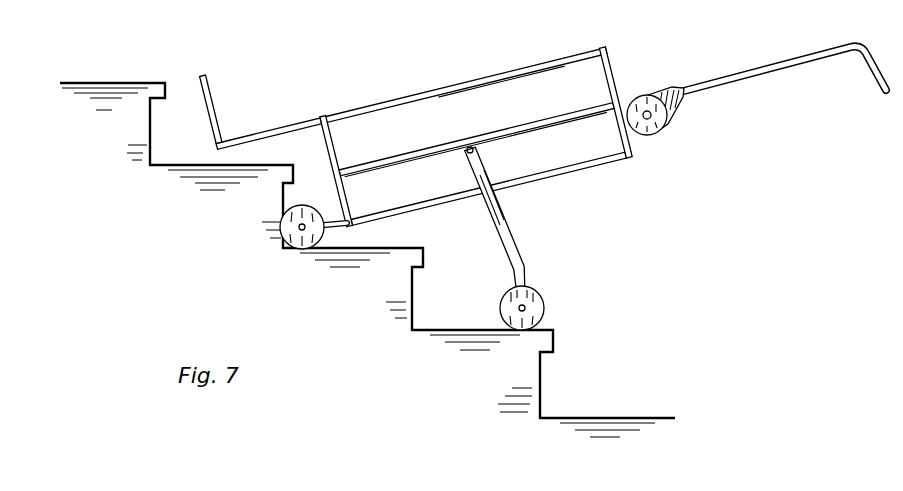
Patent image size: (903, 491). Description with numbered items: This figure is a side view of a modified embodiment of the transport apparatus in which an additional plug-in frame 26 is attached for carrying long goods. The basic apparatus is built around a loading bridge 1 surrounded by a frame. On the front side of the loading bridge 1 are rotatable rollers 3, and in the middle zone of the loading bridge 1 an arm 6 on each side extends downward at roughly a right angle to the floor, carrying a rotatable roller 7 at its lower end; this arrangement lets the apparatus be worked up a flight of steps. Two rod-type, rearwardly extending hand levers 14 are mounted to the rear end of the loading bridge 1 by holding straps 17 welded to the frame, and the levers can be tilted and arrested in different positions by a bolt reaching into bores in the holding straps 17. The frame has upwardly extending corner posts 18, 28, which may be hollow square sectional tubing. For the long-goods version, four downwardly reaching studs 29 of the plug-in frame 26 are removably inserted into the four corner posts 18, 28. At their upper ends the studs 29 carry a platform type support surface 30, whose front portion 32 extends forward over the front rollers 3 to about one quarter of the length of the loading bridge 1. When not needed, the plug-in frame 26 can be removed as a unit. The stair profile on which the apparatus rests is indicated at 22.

The loading bridge 1 is at (520, 154).
The rotatable rollers 3 is at (282, 226).
The arm 6 is at (509, 231).
The rotatable roller 7 is at (546, 303).
The hand levers 14 is at (756, 77).
The holding straps 17 is at (645, 97).
The posts 18 is at (476, 130).
The stairs 22 is at (553, 368).
The plug-in frame 26 is at (422, 111).
The posts 28 is at (614, 118).
The studs 29 is at (329, 135).
The platform type support surface 30 is at (356, 111).
The front portion of the support surface 32 is at (228, 131).